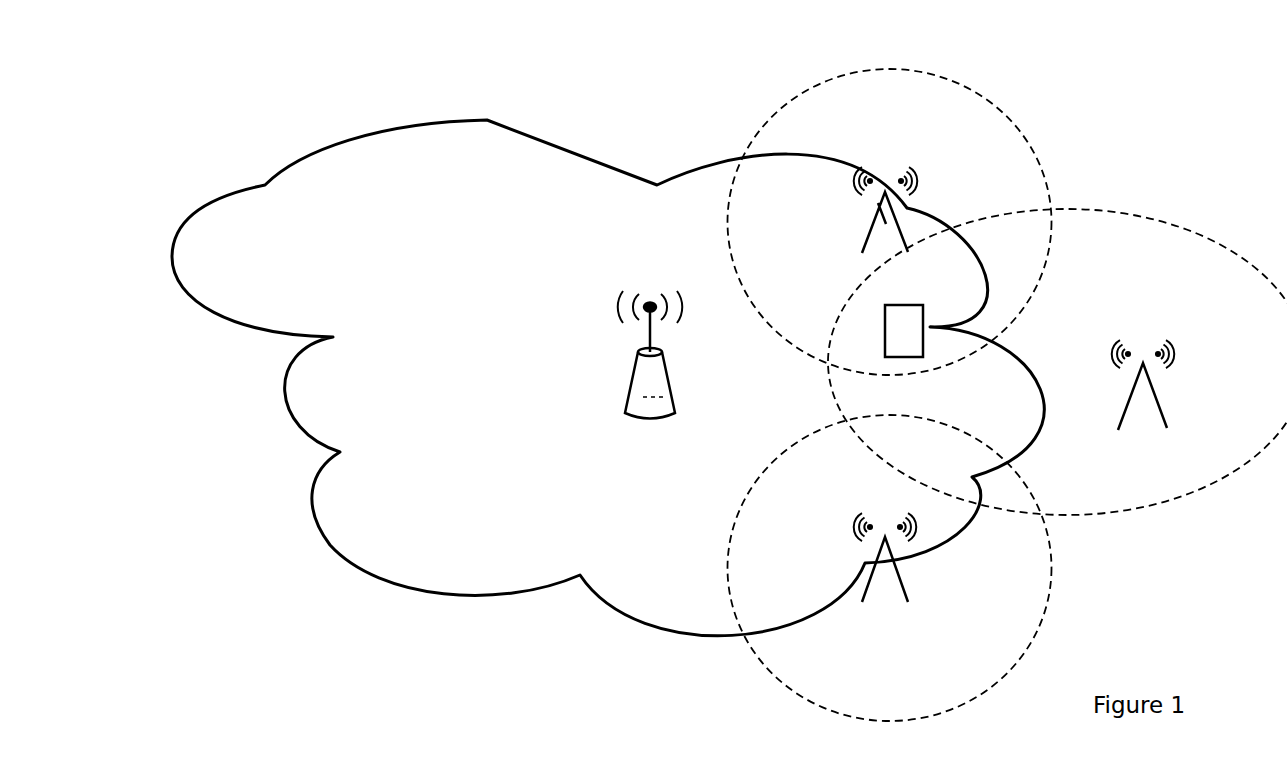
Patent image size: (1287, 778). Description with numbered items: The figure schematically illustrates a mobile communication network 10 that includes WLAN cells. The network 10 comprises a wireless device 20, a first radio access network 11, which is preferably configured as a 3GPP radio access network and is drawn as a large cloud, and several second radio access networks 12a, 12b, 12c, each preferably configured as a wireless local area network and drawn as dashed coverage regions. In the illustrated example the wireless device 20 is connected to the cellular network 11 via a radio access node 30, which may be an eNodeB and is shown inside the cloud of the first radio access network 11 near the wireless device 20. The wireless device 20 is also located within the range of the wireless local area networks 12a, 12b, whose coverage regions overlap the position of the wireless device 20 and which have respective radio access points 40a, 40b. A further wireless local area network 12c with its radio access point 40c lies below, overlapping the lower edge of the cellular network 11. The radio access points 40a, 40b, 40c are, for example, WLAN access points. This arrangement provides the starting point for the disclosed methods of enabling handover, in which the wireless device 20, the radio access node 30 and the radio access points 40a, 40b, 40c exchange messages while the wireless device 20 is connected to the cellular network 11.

The mobile communication network 10 is at (1138, 134).
The first radio access network 11 is at (550, 131).
The second radio access network 12a is at (991, 105).
The second radio access network 12b is at (1195, 233).
The second radio access network 12c is at (1050, 612).
The wireless device 20 is at (883, 323).
The radio access node 30 is at (632, 382).
The radio access point 40a is at (885, 192).
The radio access point 40b is at (1142, 388).
The radio access point 40c is at (883, 568).